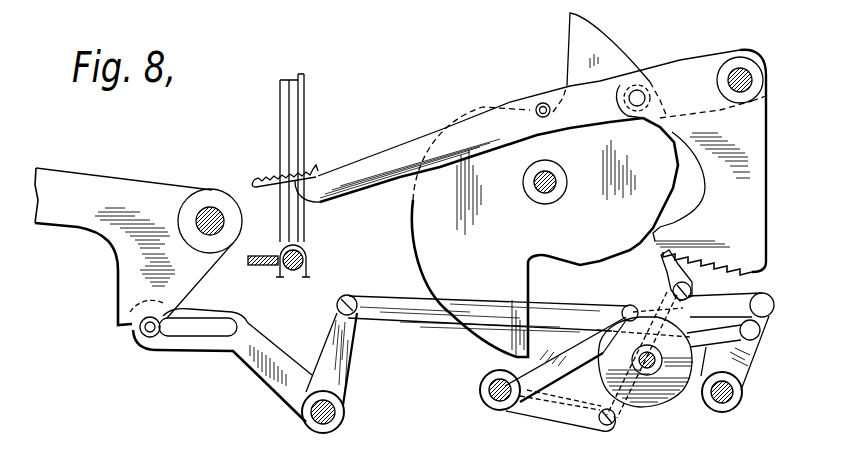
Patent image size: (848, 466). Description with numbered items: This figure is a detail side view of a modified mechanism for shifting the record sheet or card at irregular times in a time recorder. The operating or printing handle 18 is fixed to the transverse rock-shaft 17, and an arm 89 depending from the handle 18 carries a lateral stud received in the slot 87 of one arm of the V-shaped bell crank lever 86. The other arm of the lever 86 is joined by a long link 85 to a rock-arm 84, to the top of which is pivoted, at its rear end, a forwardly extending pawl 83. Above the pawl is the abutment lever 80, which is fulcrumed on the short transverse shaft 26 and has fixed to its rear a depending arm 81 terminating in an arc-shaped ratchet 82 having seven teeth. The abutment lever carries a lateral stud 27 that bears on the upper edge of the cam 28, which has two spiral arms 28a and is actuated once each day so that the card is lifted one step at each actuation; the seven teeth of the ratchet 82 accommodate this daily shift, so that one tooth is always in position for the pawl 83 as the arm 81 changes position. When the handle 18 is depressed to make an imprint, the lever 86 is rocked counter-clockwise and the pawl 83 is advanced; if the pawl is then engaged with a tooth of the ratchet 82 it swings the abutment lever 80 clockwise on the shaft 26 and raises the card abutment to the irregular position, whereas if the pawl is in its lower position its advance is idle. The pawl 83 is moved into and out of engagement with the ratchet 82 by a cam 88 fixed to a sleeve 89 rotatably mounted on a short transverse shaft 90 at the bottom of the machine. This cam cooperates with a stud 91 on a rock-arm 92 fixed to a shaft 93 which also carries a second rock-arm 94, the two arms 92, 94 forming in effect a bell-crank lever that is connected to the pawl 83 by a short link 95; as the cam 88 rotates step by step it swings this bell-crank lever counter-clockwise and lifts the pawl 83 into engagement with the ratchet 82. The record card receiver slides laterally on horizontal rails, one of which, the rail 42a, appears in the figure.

The transverse rock-shaft 17 is at (212, 212).
The operating handle 18 is at (121, 183).
The short transverse shaft 26 is at (746, 68).
The lateral stud 27 is at (541, 103).
The cam 28 is at (550, 197).
The spiral arms 28a is at (611, 44).
The horizontal rail 42a is at (307, 260).
The abutment lever 80 is at (383, 157).
The depending arm 81 is at (709, 161).
The arc-shaped ratchet 82 is at (715, 262).
The pawl 83 is at (668, 273).
The rock-arm 84 is at (754, 351).
The long link 85 is at (395, 297).
The V-shaped bell crank lever 86 is at (338, 364).
The slot 87 is at (207, 328).
The cam 88 is at (660, 403).
The sleeve 89 is at (130, 324).
The short transverse shaft 90 is at (652, 366).
The stud 91 is at (625, 310).
The rock-arm 92 is at (566, 359).
The shaft 93 is at (503, 404).
The second rock-arm 94 is at (564, 422).
The short link 95 is at (609, 424).